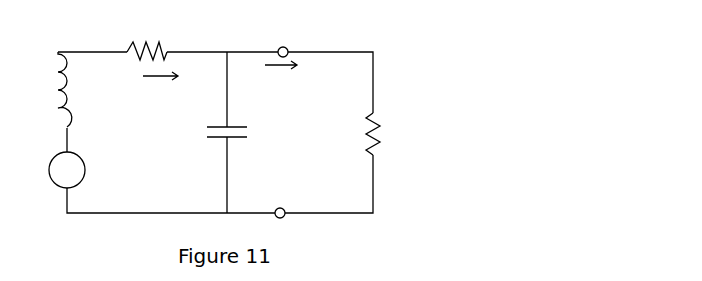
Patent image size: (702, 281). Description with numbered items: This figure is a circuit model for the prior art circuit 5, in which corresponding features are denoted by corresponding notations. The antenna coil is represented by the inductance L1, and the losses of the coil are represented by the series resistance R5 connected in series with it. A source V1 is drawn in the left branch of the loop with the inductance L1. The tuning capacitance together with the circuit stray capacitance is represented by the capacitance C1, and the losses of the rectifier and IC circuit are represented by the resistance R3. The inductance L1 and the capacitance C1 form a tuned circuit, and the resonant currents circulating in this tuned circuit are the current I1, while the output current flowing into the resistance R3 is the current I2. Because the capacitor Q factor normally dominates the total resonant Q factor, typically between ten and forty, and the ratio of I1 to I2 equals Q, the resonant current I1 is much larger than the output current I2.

The prior art circuit 5 is at (302, 112).
The series resistance R5 is at (147, 37).
The inductance L1 is at (84, 89).
The resonant current I1 is at (160, 89).
The output current I2 is at (281, 80).
The voltage source V1 is at (81, 170).
The tuning capacitance C1 is at (243, 135).
The load resistance R3 is at (389, 134).